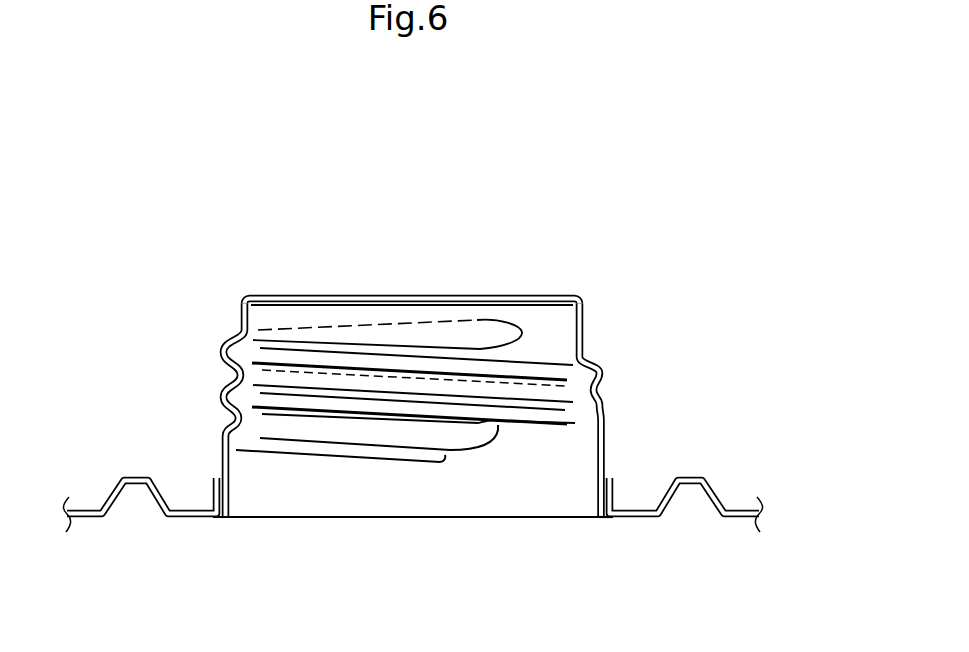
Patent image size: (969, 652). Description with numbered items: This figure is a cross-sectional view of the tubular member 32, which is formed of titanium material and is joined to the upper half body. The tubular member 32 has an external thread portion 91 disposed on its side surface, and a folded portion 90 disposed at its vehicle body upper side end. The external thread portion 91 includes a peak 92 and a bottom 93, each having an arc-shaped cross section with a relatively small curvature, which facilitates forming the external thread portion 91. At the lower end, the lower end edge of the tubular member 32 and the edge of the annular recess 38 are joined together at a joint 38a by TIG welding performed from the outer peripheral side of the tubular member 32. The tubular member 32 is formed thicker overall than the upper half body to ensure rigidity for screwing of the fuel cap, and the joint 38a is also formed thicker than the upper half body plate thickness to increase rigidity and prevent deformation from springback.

The tubular member 32 is at (377, 312).
The folded portion 90 is at (353, 299).
The external thread portion 91 is at (488, 320).
The peak 92 is at (219, 351).
The bottom 93 is at (234, 416).
The annular recess 38 is at (640, 507).
The joint 38a is at (605, 519).